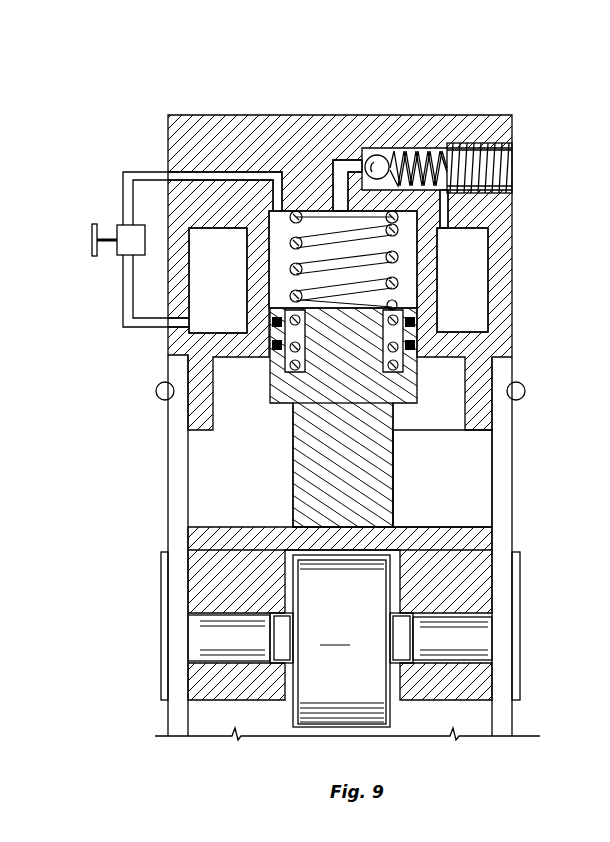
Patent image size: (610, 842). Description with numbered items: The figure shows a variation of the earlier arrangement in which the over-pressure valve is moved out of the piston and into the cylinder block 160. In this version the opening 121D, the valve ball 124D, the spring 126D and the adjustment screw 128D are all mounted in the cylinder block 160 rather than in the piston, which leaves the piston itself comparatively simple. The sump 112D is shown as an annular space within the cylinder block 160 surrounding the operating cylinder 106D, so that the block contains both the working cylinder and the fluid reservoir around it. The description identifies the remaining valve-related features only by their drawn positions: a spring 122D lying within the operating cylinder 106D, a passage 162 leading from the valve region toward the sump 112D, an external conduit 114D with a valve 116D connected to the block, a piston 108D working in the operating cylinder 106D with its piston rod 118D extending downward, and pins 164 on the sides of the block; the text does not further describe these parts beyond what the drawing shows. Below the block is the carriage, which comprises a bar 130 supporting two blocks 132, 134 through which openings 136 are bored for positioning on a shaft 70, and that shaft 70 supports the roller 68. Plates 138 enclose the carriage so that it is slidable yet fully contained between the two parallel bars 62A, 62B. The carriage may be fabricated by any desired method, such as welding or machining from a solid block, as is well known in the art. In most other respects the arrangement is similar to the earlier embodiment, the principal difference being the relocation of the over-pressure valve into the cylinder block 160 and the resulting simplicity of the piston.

The cylinder block 160 is at (206, 113).
The sump 112D is at (232, 303).
The operating cylinder 106D is at (276, 236).
The coil spring 122D is at (320, 236).
The opening 121D is at (340, 190).
The valve ball 124D is at (380, 155).
The spring 126D is at (447, 146).
The adjustment screw 128D is at (487, 171).
The passage 162 is at (446, 230).
The conduit 114D is at (123, 195).
The valve 116D is at (92, 242).
The piston 108D is at (268, 374).
The piston rod 118D is at (293, 464).
The bar 130 is at (441, 526).
The parallel bar 62A is at (168, 490).
The parallel bar 62B is at (513, 473).
The pivot pin 164 is at (158, 391).
The block 134 is at (222, 572).
The block 132 is at (468, 686).
The plate 138 is at (165, 612).
The shaft 70 is at (270, 645).
The roller 68 is at (295, 712).
The opening 136 is at (470, 620).